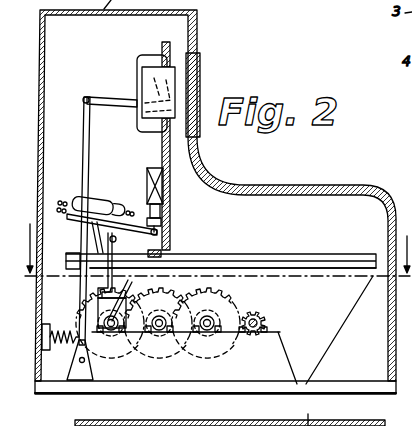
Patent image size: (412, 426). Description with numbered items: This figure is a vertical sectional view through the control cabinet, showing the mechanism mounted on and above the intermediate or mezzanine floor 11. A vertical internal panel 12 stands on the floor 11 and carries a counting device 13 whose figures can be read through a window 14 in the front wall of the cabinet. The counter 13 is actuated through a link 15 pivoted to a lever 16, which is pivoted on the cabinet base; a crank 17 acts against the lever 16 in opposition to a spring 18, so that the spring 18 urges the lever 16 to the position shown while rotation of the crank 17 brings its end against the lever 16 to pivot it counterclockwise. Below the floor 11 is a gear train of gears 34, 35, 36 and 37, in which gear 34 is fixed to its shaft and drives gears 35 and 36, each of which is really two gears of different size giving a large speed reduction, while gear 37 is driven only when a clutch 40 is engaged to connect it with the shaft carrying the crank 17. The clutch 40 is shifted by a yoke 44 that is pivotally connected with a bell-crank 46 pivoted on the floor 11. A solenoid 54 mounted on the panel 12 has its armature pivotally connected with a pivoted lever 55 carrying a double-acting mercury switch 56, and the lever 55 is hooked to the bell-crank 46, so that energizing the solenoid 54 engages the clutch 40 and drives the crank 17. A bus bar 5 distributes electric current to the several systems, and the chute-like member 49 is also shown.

The bus bar 5 is at (215, 241).
The intermediate floor 11 is at (66, 264).
The vertical internal panel 12 is at (171, 163).
The counting device 13 is at (172, 65).
The window 14 is at (198, 102).
The link 15 is at (116, 86).
The lever 16 is at (83, 148).
The crank 17 is at (126, 296).
The spring 18 is at (66, 346).
The gear 34 is at (250, 337).
The gear 35 is at (210, 353).
The gear 36 is at (163, 353).
The gear 37 is at (114, 356).
The clutch 40 is at (98, 312).
The yoke 44 is at (98, 297).
The bell-crank 46 is at (148, 268).
The hopper 49 is at (278, 358).
The solenoid 54 is at (153, 168).
The pivoted lever 55 is at (112, 256).
The double-acting mercury switch 56 is at (97, 208).